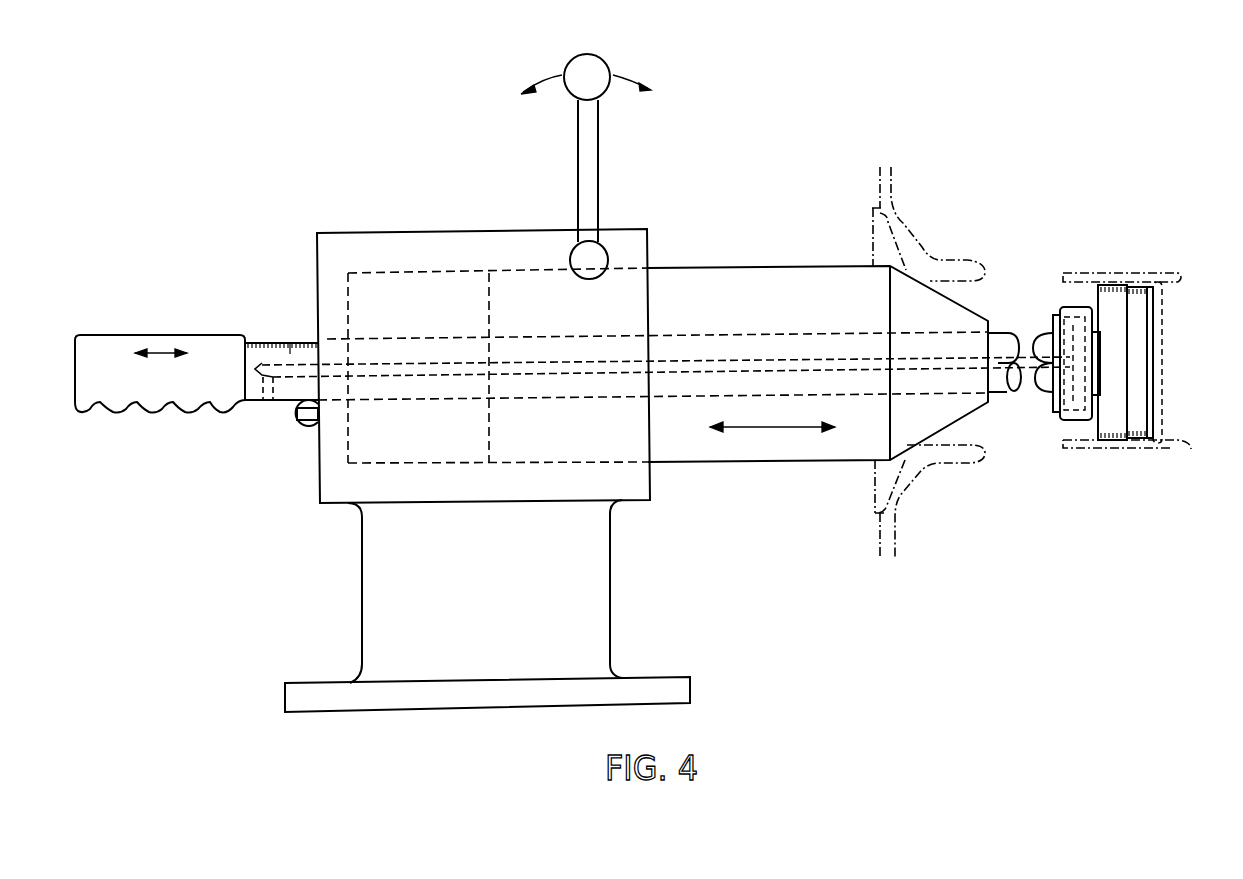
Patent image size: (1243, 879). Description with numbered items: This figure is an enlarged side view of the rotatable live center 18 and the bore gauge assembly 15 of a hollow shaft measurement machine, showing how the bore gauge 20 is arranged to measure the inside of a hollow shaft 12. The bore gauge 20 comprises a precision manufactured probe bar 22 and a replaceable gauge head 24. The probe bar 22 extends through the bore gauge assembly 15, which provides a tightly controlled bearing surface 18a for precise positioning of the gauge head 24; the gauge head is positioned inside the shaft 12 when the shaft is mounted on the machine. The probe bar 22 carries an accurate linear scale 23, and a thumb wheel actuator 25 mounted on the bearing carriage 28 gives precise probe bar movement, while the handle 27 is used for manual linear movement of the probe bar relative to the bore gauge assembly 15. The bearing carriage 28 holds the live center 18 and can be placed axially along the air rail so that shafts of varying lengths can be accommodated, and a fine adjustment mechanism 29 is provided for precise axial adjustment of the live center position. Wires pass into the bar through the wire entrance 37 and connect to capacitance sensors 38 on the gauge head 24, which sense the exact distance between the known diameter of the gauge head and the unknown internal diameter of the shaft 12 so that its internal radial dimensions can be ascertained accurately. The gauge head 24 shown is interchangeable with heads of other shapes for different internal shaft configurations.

The hollow shaft 12 is at (910, 482).
The bore gauge assembly 15 is at (350, 196).
The live center 18 is at (746, 278).
The bearing surface 18a is at (757, 335).
The bore gauge 20 is at (283, 403).
The probe bar 22 is at (278, 342).
The linear scale 23 is at (290, 342).
The gauge head 24 is at (1138, 405).
The thumb wheel actuator 25 is at (303, 426).
The handle 27 is at (100, 346).
The bearing carriage 28 is at (580, 608).
The fine adjustment mechanism 29 is at (583, 68).
The wire entrance 37 is at (273, 402).
The capacitance sensors 38 is at (1135, 286).